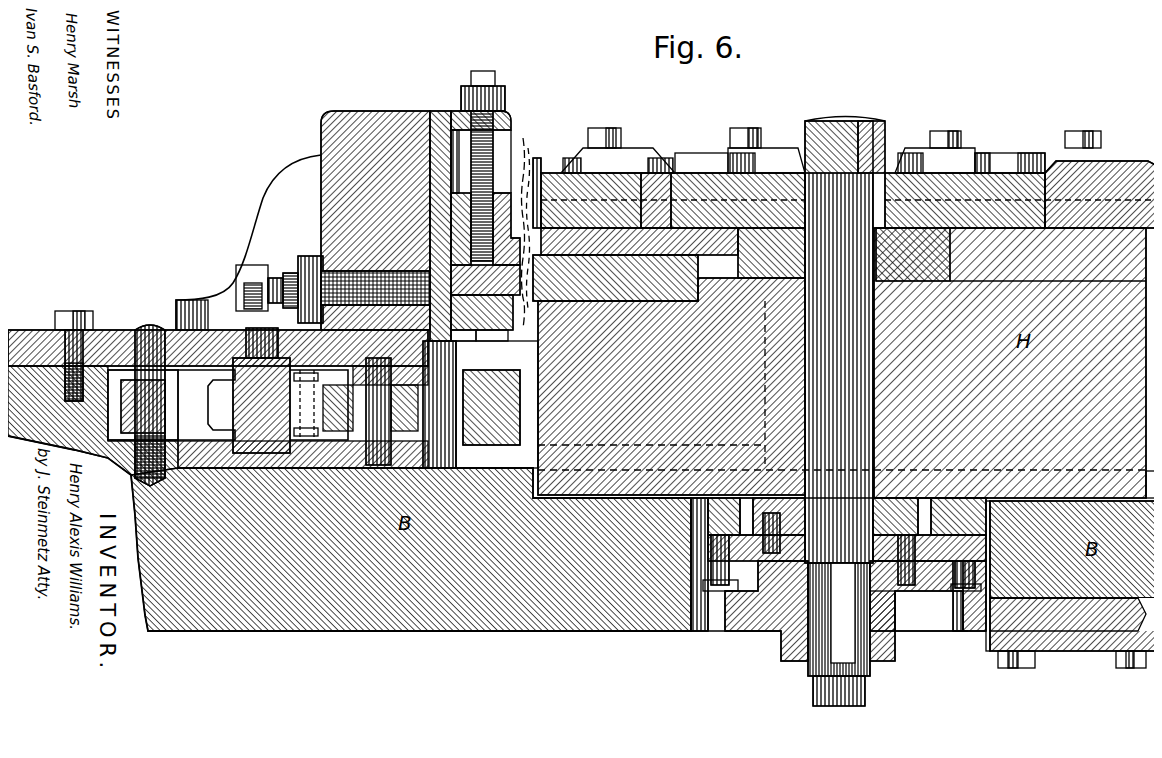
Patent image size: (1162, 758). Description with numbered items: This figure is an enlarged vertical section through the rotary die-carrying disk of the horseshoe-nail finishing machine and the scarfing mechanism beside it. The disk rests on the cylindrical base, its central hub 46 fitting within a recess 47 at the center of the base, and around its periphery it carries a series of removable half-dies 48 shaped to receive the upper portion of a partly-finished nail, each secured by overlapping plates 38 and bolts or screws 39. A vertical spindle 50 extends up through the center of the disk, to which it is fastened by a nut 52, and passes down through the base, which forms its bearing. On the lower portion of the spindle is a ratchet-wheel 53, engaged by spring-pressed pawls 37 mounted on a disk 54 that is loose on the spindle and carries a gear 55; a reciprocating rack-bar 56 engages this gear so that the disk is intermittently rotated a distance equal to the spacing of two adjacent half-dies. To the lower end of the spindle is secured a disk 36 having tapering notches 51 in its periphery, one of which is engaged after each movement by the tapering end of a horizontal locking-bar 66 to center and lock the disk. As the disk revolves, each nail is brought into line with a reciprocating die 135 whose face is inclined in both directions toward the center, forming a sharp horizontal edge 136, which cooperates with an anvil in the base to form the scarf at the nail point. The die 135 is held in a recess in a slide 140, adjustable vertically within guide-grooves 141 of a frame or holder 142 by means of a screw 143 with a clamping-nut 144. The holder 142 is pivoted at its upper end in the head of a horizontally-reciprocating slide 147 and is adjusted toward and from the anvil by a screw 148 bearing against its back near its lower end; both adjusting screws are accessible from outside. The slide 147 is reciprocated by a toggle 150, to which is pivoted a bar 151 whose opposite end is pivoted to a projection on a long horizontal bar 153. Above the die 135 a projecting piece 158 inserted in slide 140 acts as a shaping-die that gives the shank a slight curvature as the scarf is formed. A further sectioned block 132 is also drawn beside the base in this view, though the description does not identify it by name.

The disk 36 is at (760, 625).
The spring-pressed pawls 37 is at (697, 558).
The overlapping plates 38 is at (640, 140).
The bolts or screws 39 is at (600, 120).
The central hub 46 is at (913, 254).
The recess 47 is at (935, 275).
The half-dies 48 is at (540, 160).
The vertical spindle 50 is at (832, 112).
The tapering notches 51 is at (708, 613).
The nut 52 is at (872, 112).
The ratchet-wheel 53 is at (928, 596).
The disk 54 is at (844, 563).
The gear 55 is at (779, 525).
The reciprocating rack-bar 56 is at (929, 516).
The horizontal locking-bar 66 is at (1040, 612).
The slide block 132 is at (615, 278).
The reciprocating die 135 is at (485, 280).
The sharp horizontal edge 136 is at (529, 233).
The slide 140 is at (482, 312).
The guide-grooves 141 is at (455, 333).
The frame or holder 142 is at (428, 170).
The screw 143 is at (487, 72).
The clamping-nut 144 is at (462, 92).
The horizontally-reciprocating slide 147 is at (316, 208).
The screw 148 is at (236, 262).
The toggle 150 is at (228, 405).
The bar 151 is at (261, 390).
The long horizontal bar 153 is at (487, 415).
The projecting piece 158 is at (522, 185).